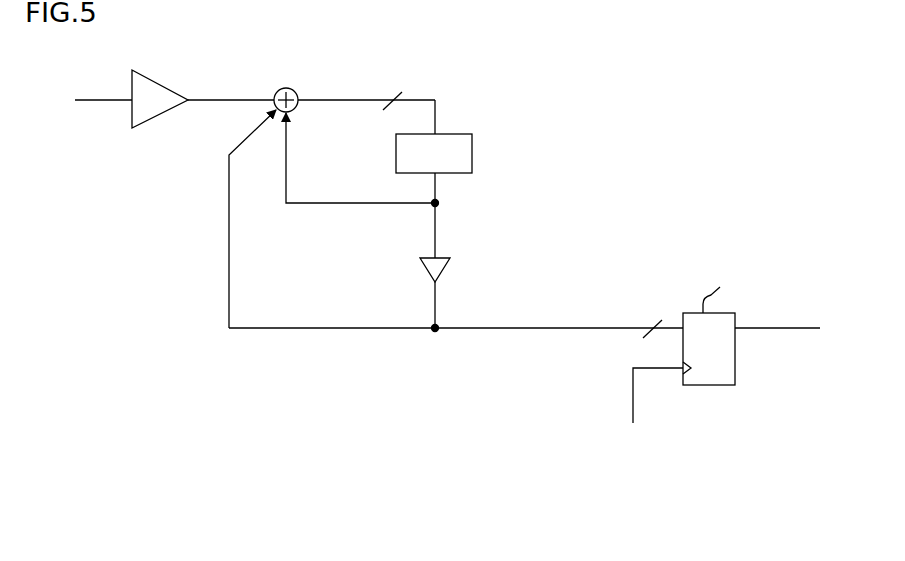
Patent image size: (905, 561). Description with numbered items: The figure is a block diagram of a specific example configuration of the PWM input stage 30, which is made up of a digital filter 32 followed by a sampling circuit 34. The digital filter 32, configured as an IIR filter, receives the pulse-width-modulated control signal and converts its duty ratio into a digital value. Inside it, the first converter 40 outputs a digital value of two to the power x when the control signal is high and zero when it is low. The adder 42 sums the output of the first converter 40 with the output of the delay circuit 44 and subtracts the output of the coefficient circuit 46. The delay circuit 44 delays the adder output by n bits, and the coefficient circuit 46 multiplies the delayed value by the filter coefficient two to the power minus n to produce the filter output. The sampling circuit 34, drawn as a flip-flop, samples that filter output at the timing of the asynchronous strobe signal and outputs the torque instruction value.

The PWM input stage 30 is at (418, 548).
The digital filter 32 is at (478, 372).
The sampling circuit 34 is at (570, 460).
The first converter 40 is at (159, 115).
The adder 42 is at (296, 88).
The delay circuit 44 is at (472, 150).
The coefficient circuit 46 is at (420, 273).